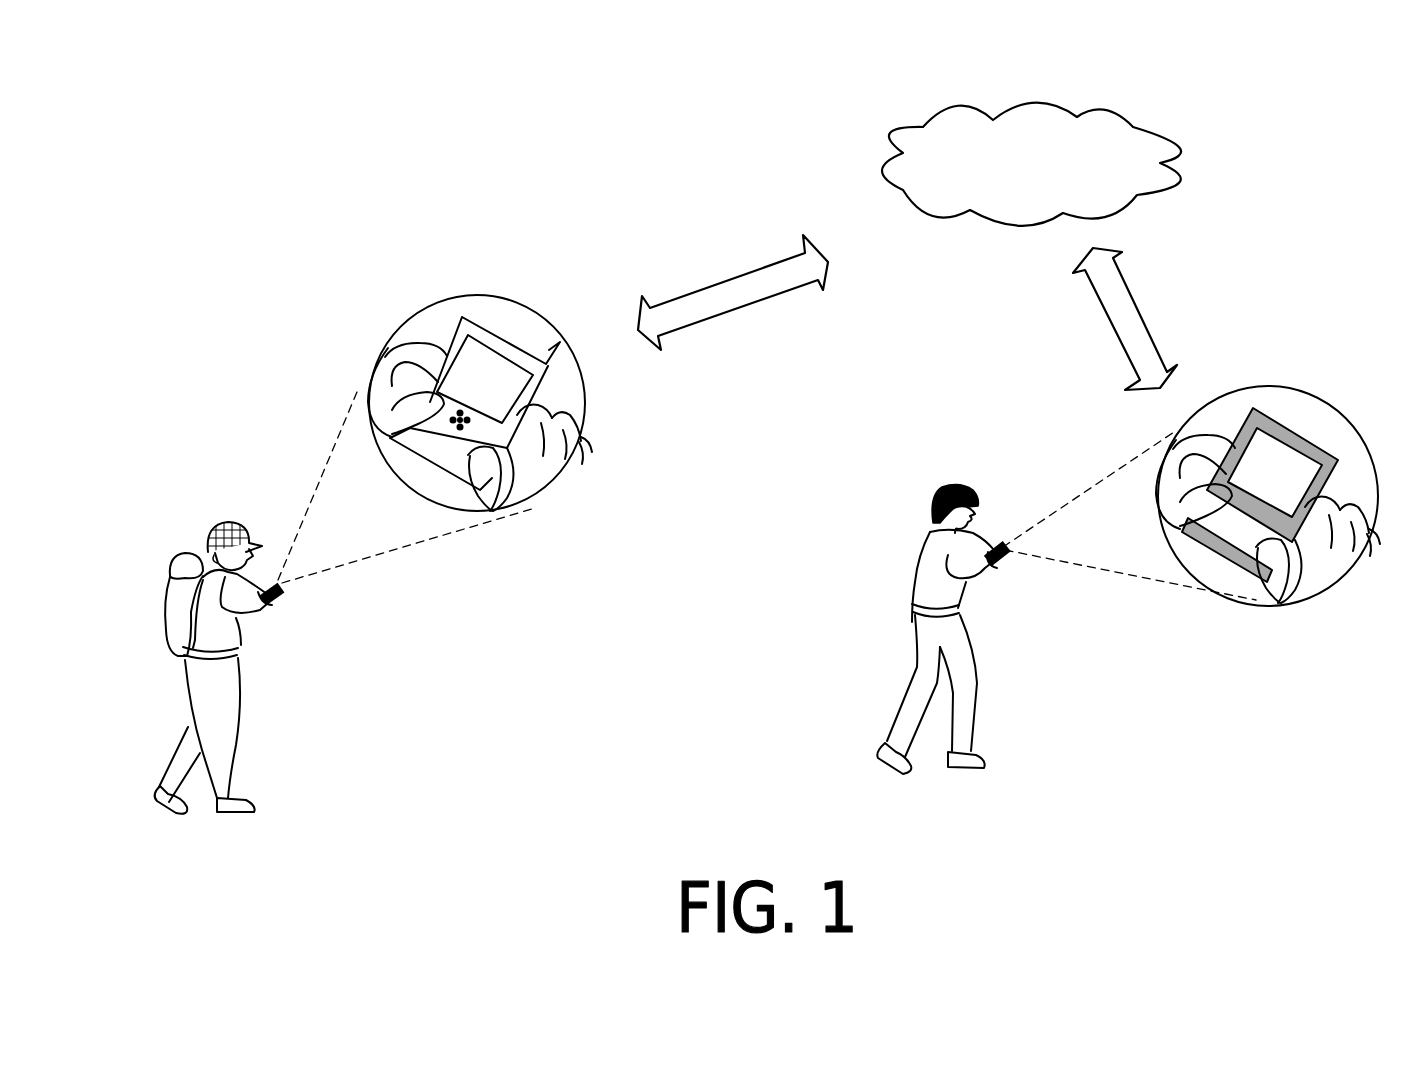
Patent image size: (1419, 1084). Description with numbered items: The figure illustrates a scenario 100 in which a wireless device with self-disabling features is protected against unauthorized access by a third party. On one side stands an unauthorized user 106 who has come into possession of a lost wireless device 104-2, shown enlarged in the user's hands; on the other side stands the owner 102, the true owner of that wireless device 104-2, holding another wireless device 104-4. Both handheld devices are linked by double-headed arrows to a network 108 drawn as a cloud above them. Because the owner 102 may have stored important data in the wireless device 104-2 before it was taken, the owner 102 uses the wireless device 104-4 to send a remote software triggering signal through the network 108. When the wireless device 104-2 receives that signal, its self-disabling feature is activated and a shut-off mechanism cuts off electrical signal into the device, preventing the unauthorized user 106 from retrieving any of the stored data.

The scenario 100 is at (202, 103).
The owner 102 is at (910, 545).
The wireless device 104-2 is at (535, 532).
The wireless device 104-4 is at (1256, 612).
The unauthorized user 106 is at (295, 697).
The network 108 is at (1031, 164).